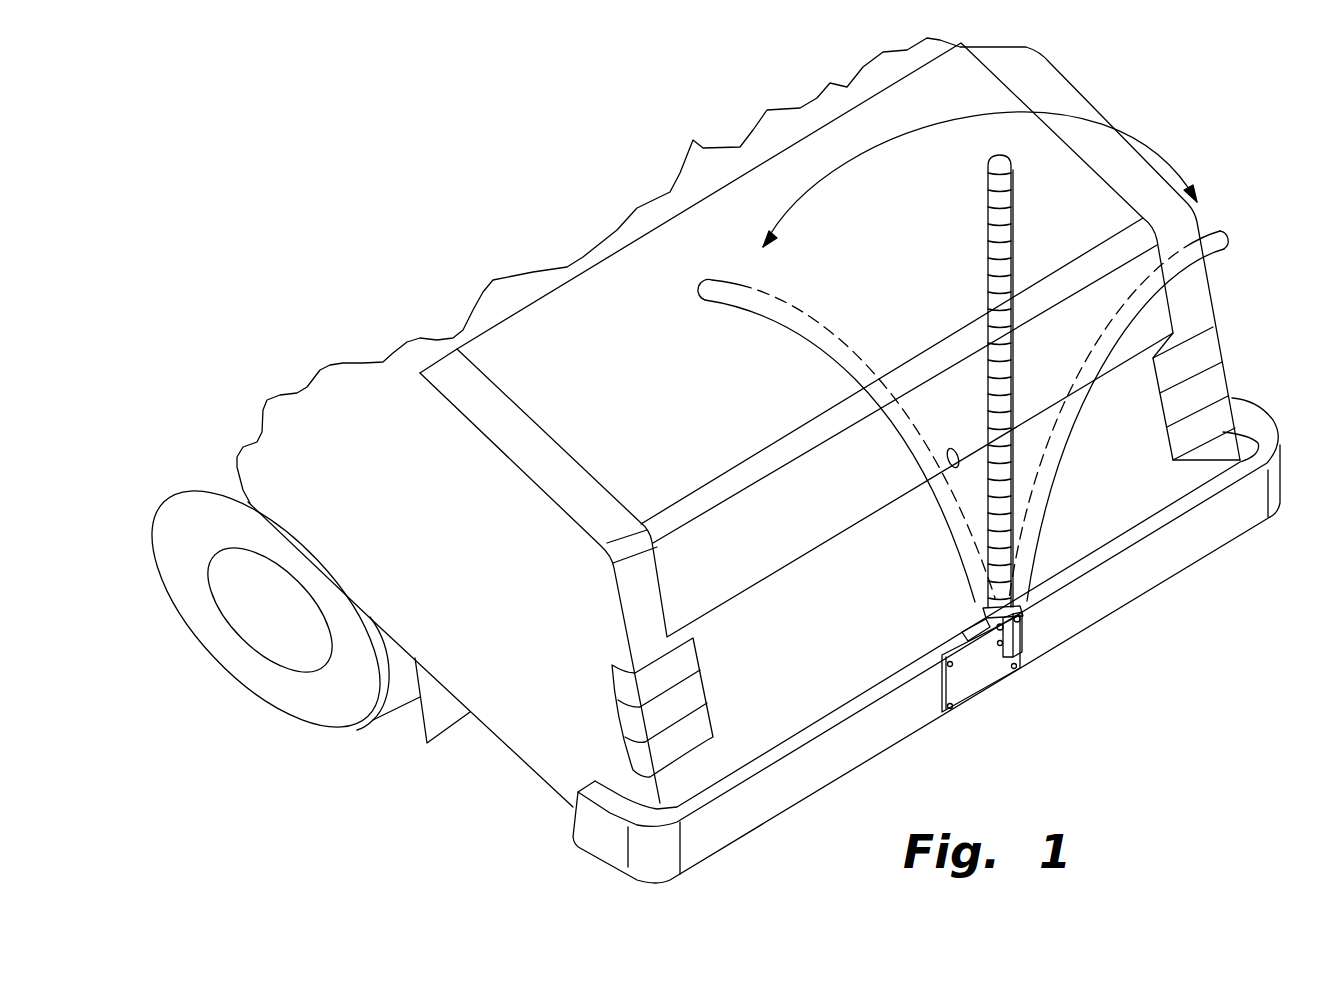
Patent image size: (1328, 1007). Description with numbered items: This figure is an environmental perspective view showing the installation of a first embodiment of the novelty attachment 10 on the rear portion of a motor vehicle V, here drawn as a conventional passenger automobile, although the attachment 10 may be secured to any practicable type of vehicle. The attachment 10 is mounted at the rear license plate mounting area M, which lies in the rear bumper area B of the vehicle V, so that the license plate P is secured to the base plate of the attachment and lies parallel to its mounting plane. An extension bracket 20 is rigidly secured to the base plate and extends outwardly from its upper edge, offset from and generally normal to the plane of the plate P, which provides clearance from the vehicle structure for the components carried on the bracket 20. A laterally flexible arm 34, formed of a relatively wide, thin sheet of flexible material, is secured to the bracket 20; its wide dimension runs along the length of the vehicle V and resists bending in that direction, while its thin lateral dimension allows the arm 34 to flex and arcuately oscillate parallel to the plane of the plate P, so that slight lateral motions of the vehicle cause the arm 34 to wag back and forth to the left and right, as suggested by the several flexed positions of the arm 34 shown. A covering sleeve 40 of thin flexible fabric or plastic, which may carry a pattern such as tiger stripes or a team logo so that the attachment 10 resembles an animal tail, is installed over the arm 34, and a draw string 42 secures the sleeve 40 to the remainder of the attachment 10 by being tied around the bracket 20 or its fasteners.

The novelty attachment 10 is at (963, 450).
The extension bracket 20 is at (1008, 640).
The laterally flexible arm 34 is at (997, 277).
The covering sleeve 40 is at (998, 238).
The draw string 42 is at (983, 607).
The motor vehicle V is at (459, 533).
The rear bumper area B is at (838, 778).
The rear license plate mounting area M is at (957, 645).
The license plate P is at (991, 682).